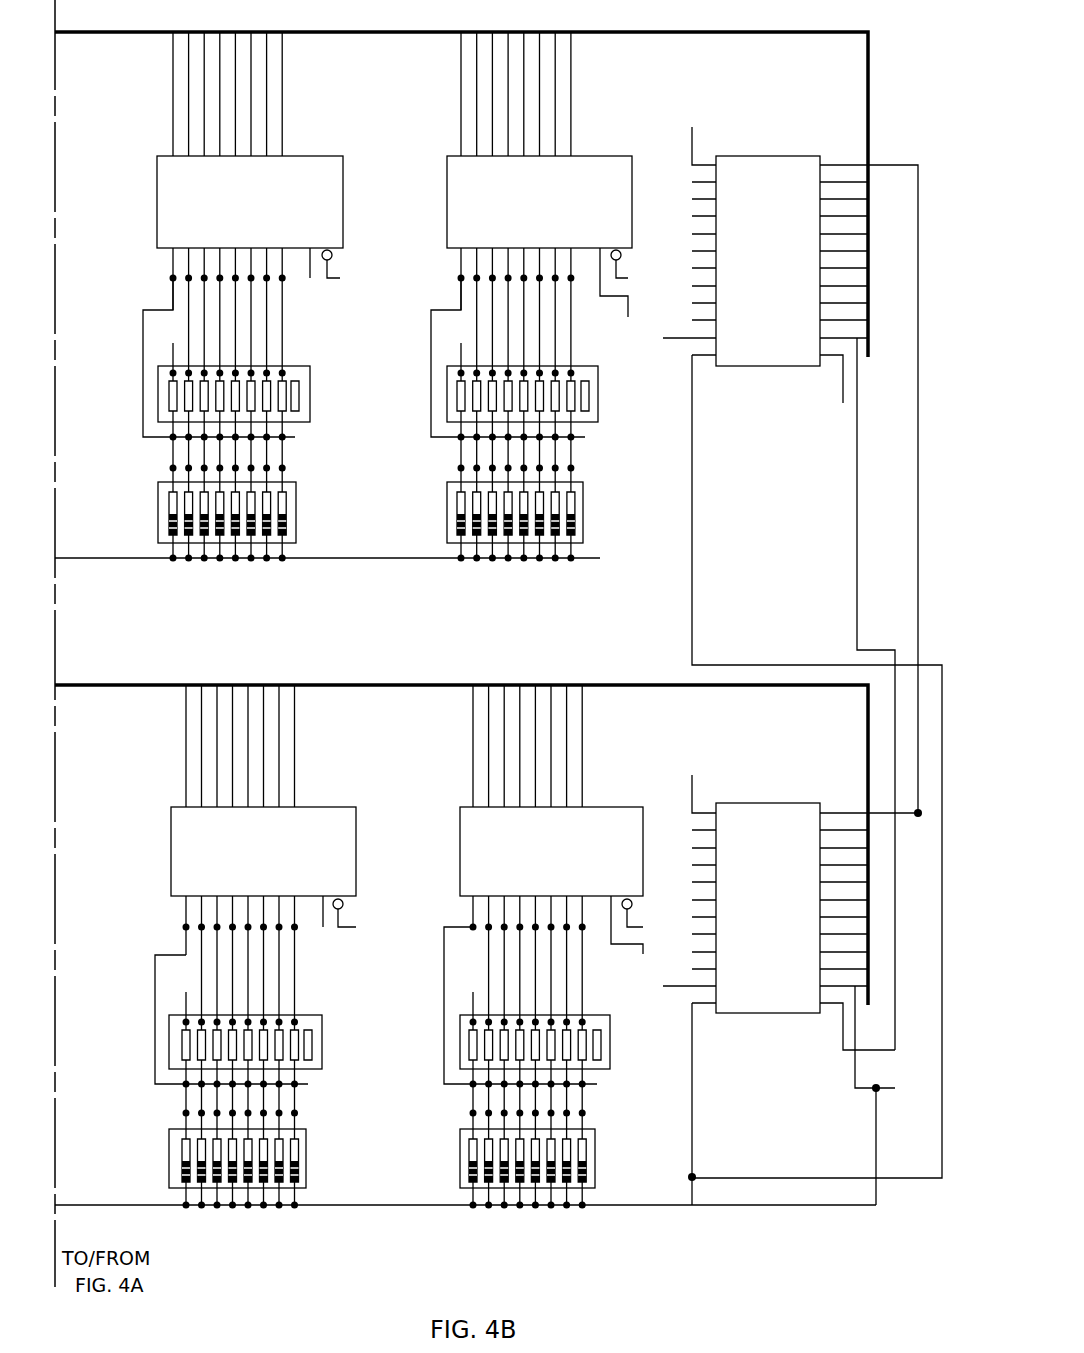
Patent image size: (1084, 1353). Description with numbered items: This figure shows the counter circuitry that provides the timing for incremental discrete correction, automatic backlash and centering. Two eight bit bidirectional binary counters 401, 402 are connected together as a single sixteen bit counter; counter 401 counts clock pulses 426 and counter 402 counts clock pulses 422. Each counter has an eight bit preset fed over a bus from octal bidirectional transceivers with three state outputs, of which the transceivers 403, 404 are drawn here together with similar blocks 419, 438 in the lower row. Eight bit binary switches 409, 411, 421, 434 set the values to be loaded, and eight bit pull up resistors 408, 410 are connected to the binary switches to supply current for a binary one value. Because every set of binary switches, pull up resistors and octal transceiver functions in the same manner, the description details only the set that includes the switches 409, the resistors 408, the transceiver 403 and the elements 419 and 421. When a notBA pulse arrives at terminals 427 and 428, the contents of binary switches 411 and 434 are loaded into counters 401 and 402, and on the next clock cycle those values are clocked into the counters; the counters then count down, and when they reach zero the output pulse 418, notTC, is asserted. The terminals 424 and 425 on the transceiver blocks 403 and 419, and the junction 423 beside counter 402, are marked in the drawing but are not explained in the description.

The 8 bit bidirectional binary counter 401 is at (788, 156).
The 8 bit bidirectional binary counter 402 is at (774, 803).
The octal bidirectional transceiver 403 is at (447, 163).
The octal bidirectional transceiver 404 is at (157, 163).
The eight bit pull up resistors 408 is at (598, 403).
The 8 bit binary switches 409 is at (583, 520).
The eight bit pull up resistors 410 is at (310, 390).
The 8 bit binary switches 411 is at (296, 497).
The output pulse notTC 418 is at (895, 1088).
The counter circuit set element 419 is at (460, 811).
The counter circuit set element 421 is at (595, 1160).
The clock pulses 422 is at (663, 986).
The connection node 423 is at (917, 814).
The enable output 424 is at (628, 278).
The enable output 425 is at (643, 927).
The clock pulses 426 is at (663, 338).
The notBA pulse input 427 is at (340, 278).
The notBA pulse input 428 is at (356, 927).
The 8 bit binary switches 434 is at (306, 1153).
The buffer/latch 438 is at (171, 811).